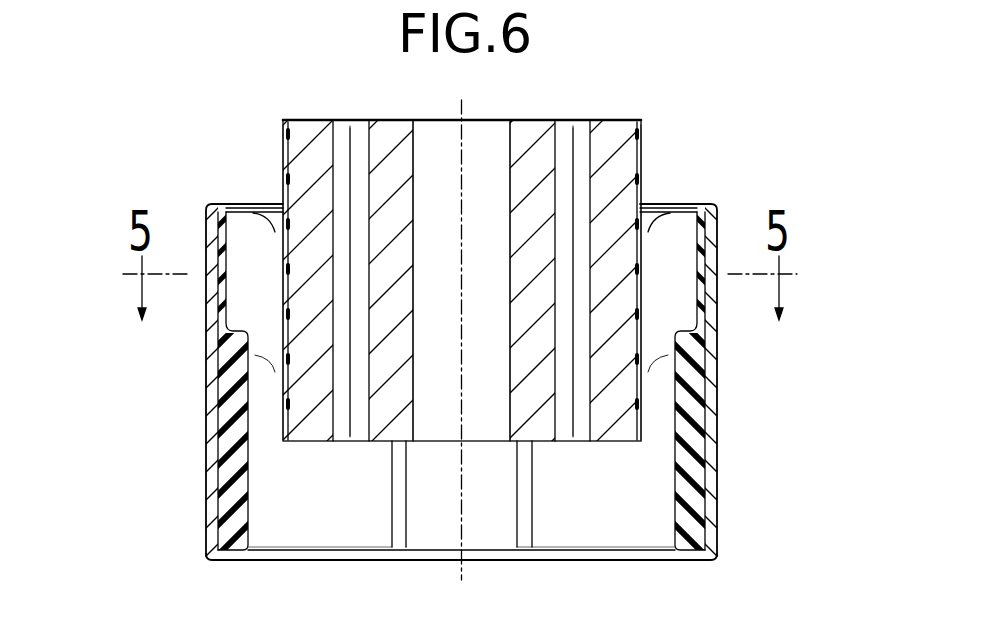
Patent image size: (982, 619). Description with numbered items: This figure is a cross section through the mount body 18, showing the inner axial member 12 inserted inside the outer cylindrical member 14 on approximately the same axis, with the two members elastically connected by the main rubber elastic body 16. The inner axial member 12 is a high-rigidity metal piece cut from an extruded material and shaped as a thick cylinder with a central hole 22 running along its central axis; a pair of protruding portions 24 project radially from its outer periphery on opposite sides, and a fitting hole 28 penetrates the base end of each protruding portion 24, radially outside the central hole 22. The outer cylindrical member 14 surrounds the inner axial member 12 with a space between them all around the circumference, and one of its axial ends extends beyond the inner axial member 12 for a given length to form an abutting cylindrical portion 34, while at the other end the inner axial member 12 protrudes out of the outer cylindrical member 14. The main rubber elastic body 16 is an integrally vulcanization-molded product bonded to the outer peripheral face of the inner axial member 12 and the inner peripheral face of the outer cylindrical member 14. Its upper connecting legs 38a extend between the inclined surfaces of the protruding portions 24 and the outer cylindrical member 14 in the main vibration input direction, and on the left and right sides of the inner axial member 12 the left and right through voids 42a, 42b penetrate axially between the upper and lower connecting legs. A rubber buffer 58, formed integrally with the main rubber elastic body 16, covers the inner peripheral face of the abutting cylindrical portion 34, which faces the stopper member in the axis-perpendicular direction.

The inner axial member 12 is at (619, 114).
The outer cylindrical member 14 is at (201, 208).
The main rubber elastic body 16 is at (714, 238).
The mount body 18 is at (724, 100).
The central hole 22 is at (413, 175).
The protruding portion 24 is at (297, 400).
The fitting hole 28 is at (333, 150).
The abutting cylindrical portion 34 is at (708, 470).
The upper connecting leg 38a is at (268, 258).
The left through void 42a is at (236, 332).
The right through void 42b is at (688, 332).
The rubber buffer 58 is at (232, 508).